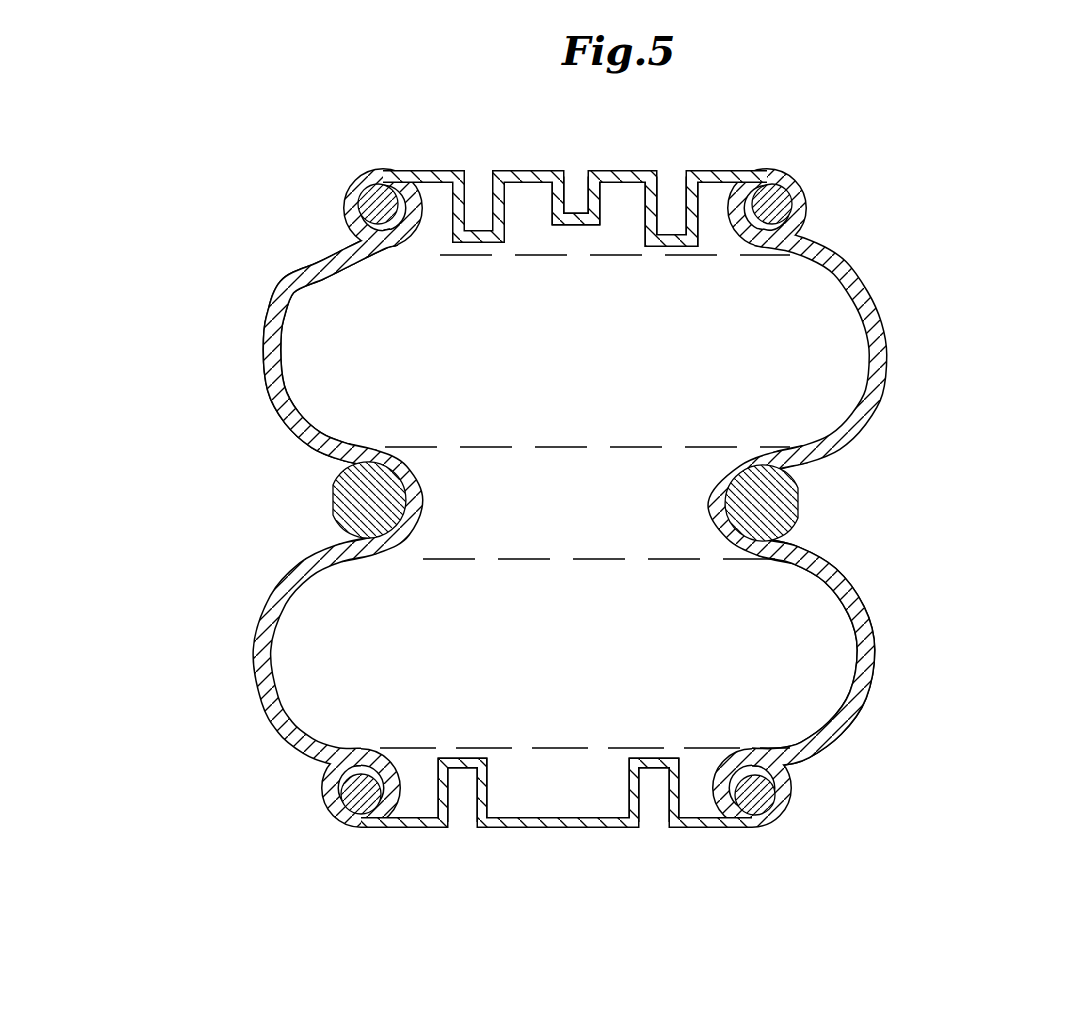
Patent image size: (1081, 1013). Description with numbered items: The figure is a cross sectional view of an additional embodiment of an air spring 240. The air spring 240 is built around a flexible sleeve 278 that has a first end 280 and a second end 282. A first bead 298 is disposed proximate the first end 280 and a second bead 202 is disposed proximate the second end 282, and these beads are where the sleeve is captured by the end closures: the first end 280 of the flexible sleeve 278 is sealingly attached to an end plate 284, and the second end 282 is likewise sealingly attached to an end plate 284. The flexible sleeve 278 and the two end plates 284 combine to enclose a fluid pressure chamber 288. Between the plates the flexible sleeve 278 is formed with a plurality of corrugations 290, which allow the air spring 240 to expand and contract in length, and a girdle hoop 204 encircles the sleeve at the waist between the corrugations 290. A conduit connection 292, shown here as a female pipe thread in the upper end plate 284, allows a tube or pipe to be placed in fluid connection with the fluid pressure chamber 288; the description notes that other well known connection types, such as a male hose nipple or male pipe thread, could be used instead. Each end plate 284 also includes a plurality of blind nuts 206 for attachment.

The second bead 202 is at (770, 800).
The girdle hoop 204 is at (337, 485).
The blind nuts 206 is at (483, 185).
The air spring 240 is at (662, 491).
The flexible sleeve 278 is at (868, 612).
The first end 280 is at (860, 237).
The second end 282 is at (887, 709).
The end plate 284 is at (630, 170).
The fluid pressure chamber 288 is at (325, 338).
The corrugations 290 is at (298, 263).
The conduit connection 292 is at (577, 185).
The first bead 298 is at (805, 200).